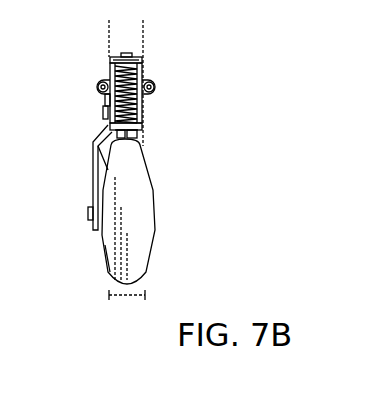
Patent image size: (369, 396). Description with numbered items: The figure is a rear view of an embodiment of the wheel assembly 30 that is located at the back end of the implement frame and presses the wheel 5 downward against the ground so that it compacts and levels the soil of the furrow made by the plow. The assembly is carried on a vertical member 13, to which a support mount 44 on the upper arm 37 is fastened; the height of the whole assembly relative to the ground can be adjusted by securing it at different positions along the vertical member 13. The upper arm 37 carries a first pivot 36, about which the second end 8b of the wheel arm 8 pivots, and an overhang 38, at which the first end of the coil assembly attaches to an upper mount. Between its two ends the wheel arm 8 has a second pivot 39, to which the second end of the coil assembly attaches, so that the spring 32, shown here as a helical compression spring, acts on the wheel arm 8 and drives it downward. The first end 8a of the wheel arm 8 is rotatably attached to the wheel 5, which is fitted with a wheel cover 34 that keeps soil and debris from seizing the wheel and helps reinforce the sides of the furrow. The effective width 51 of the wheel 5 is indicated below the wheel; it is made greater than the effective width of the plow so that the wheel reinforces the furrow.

The wheel 5 is at (109, 292).
The wheel arm 8 is at (93, 178).
The wheel arm first end 8a is at (93, 230).
The wheel arm second end 8b is at (104, 100).
The vertical member 13 is at (108, 42).
The wheel assembly 30 is at (201, 44).
The spring 32 is at (142, 110).
The wheel cover 34 is at (155, 228).
The first pivot 36 is at (102, 112).
The upper arm 37 is at (110, 60).
The overhang 38 is at (143, 60).
The second pivot 39 is at (138, 135).
The support mount 44 is at (96, 85).
The effective width 51 is at (127, 297).